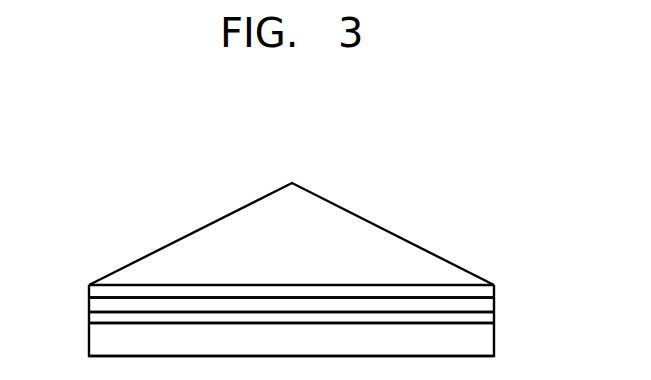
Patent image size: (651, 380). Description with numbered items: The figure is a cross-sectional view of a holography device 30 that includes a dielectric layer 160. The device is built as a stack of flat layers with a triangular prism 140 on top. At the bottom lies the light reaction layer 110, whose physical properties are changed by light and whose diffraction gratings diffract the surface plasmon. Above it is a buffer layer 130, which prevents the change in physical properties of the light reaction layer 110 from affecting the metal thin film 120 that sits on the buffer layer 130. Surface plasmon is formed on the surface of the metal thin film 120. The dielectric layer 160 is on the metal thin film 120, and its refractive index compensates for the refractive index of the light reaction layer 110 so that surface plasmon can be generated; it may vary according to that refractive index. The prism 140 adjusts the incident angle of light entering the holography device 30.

The holography device 30 is at (101, 192).
The light reaction layer 110 is at (490, 345).
The metal thin film 120 is at (494, 305).
The buffer layer 130 is at (492, 317).
The prism 140 is at (405, 250).
The dielectric layer 160 is at (496, 287).